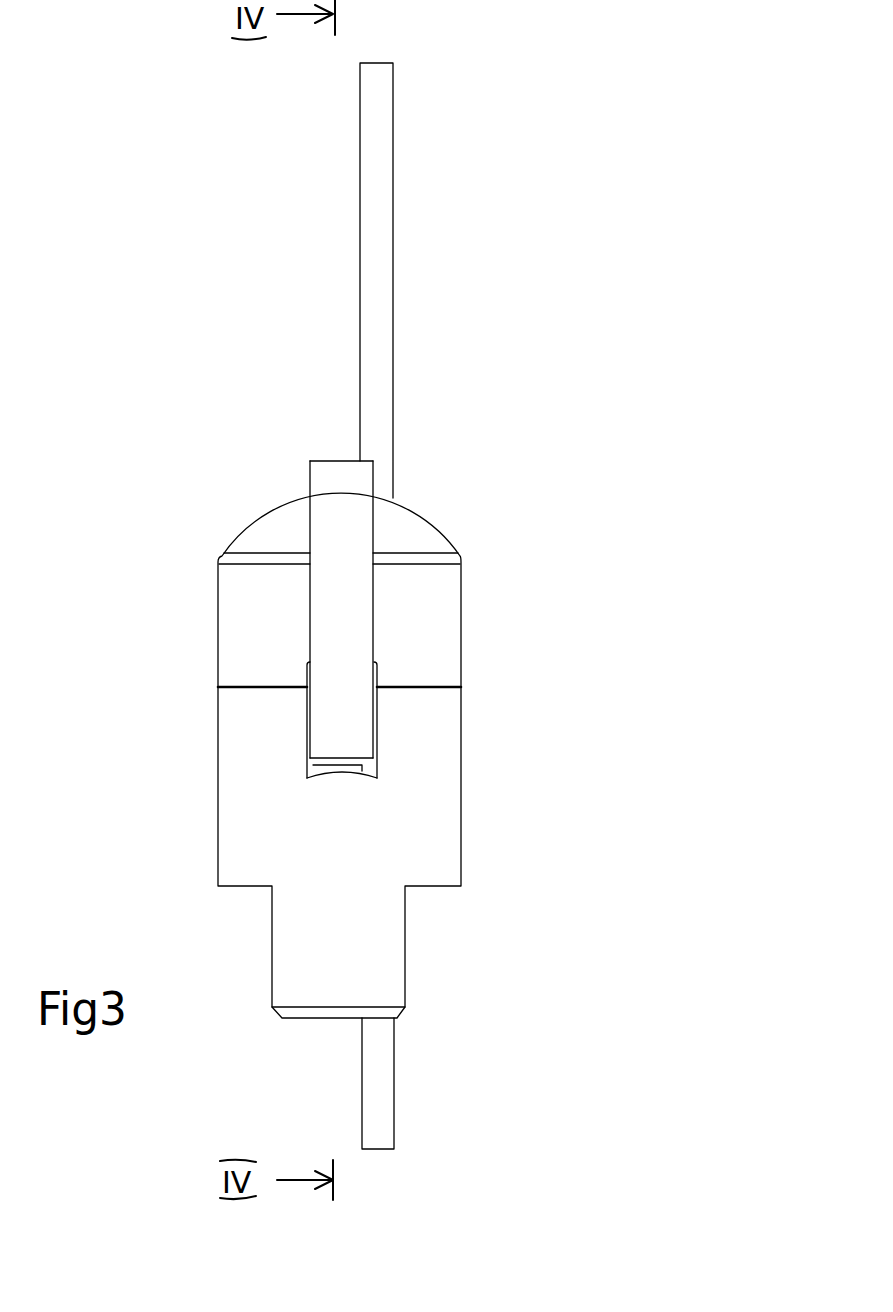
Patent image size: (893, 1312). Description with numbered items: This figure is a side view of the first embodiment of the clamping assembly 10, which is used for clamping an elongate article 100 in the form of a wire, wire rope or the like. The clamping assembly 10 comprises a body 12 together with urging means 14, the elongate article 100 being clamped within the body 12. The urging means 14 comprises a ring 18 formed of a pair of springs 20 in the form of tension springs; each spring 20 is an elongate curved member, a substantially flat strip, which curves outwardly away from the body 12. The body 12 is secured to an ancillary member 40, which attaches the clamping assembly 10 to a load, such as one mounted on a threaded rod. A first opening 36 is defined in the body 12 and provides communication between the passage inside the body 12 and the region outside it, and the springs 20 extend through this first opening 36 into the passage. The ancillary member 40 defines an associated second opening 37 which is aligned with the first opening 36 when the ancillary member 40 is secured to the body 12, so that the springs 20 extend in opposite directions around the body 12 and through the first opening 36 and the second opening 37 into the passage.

The clamping assembly 10 is at (141, 636).
The body 12 is at (200, 565).
The urging means 14 is at (371, 612).
The ring 18 is at (387, 509).
The spring 20 is at (345, 698).
The first opening 36 is at (377, 675).
The second opening 37 is at (378, 743).
The ancillary member 40 is at (466, 846).
The elongate article 100 is at (388, 203).